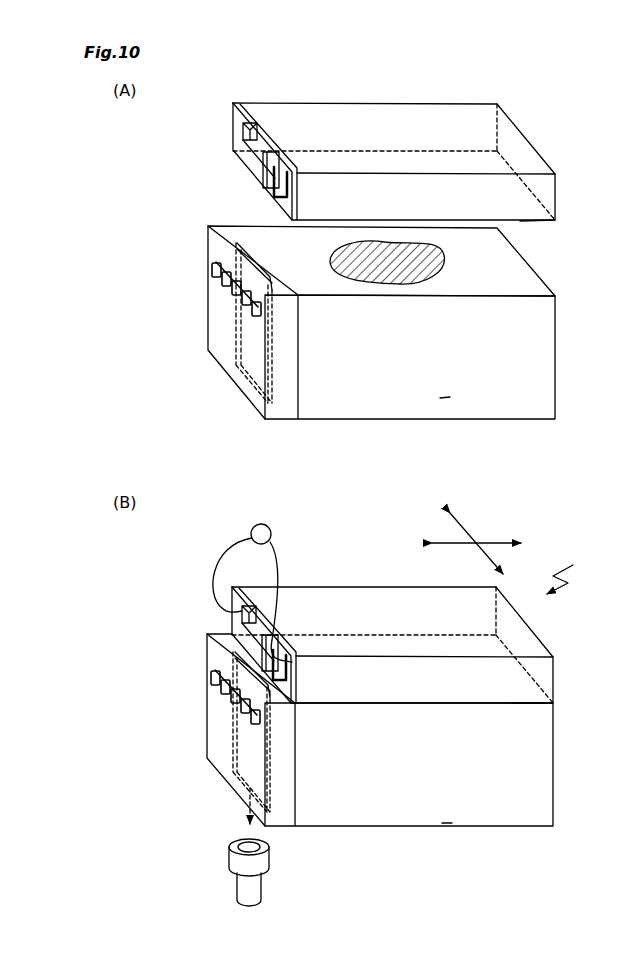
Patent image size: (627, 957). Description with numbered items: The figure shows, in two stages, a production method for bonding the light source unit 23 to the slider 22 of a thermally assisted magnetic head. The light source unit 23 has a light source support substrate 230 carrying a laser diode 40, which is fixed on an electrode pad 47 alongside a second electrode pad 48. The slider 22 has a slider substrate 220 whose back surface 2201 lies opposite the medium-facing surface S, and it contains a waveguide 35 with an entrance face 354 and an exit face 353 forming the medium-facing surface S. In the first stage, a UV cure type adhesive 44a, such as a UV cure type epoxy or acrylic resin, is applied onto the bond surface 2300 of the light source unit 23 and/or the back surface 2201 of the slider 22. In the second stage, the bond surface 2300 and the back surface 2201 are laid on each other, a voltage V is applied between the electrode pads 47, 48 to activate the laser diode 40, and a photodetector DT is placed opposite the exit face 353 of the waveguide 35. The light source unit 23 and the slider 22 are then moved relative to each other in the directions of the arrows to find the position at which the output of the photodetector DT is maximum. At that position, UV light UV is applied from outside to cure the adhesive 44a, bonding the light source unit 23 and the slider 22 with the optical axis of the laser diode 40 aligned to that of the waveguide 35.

The light source unit 23 is at (207, 133).
The slider 22 is at (205, 292).
The light source support substrate 230 is at (404, 130).
The bond surface 2300 is at (520, 221).
The slider substrate 220 is at (378, 421).
The back surface 2201 is at (515, 276).
The UV cure type adhesive 44a is at (433, 244).
The laser diode 40 is at (232, 155).
The entrance face 354 is at (240, 242).
The waveguide 35 is at (245, 343).
The exit face 353 is at (257, 795).
The electrode pad 47 is at (243, 606).
The electrode pad 48 is at (291, 662).
The voltage V is at (252, 593).
The photodetector DT is at (270, 862).
The medium-facing surface S is at (446, 398).
The UV light UV is at (516, 553).